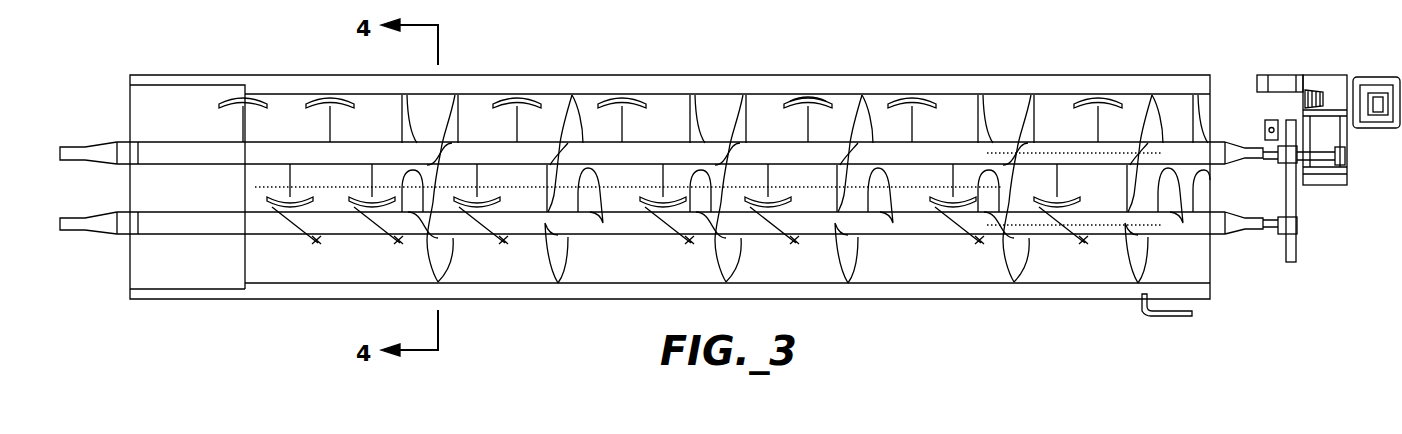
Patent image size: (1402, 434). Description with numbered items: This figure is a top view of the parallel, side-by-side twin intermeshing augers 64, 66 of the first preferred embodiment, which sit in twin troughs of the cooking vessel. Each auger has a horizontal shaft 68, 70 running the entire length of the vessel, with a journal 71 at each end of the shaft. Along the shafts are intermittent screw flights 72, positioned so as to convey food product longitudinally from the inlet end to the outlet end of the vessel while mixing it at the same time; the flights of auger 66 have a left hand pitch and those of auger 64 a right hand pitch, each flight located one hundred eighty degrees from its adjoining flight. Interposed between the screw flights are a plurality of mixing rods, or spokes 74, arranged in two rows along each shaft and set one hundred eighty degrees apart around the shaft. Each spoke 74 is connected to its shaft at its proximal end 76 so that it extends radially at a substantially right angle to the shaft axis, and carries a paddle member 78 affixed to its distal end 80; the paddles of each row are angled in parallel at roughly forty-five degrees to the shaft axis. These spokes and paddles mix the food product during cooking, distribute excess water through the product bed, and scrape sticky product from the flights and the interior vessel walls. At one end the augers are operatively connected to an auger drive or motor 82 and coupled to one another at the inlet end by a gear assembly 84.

The auger 64 is at (162, 222).
The auger 66 is at (156, 152).
The horizontal shaft 68 is at (259, 153).
The horizontal shaft 70 is at (337, 227).
The journal 71 is at (124, 148).
The screw flights 72 is at (553, 110).
The spokes 74 is at (1098, 130).
The proximal end 76 is at (808, 142).
The paddle member 78 is at (823, 95).
The distal end 80 is at (802, 97).
The auger drive or motor 82 is at (1337, 137).
The gear assembly 84 is at (1293, 200).